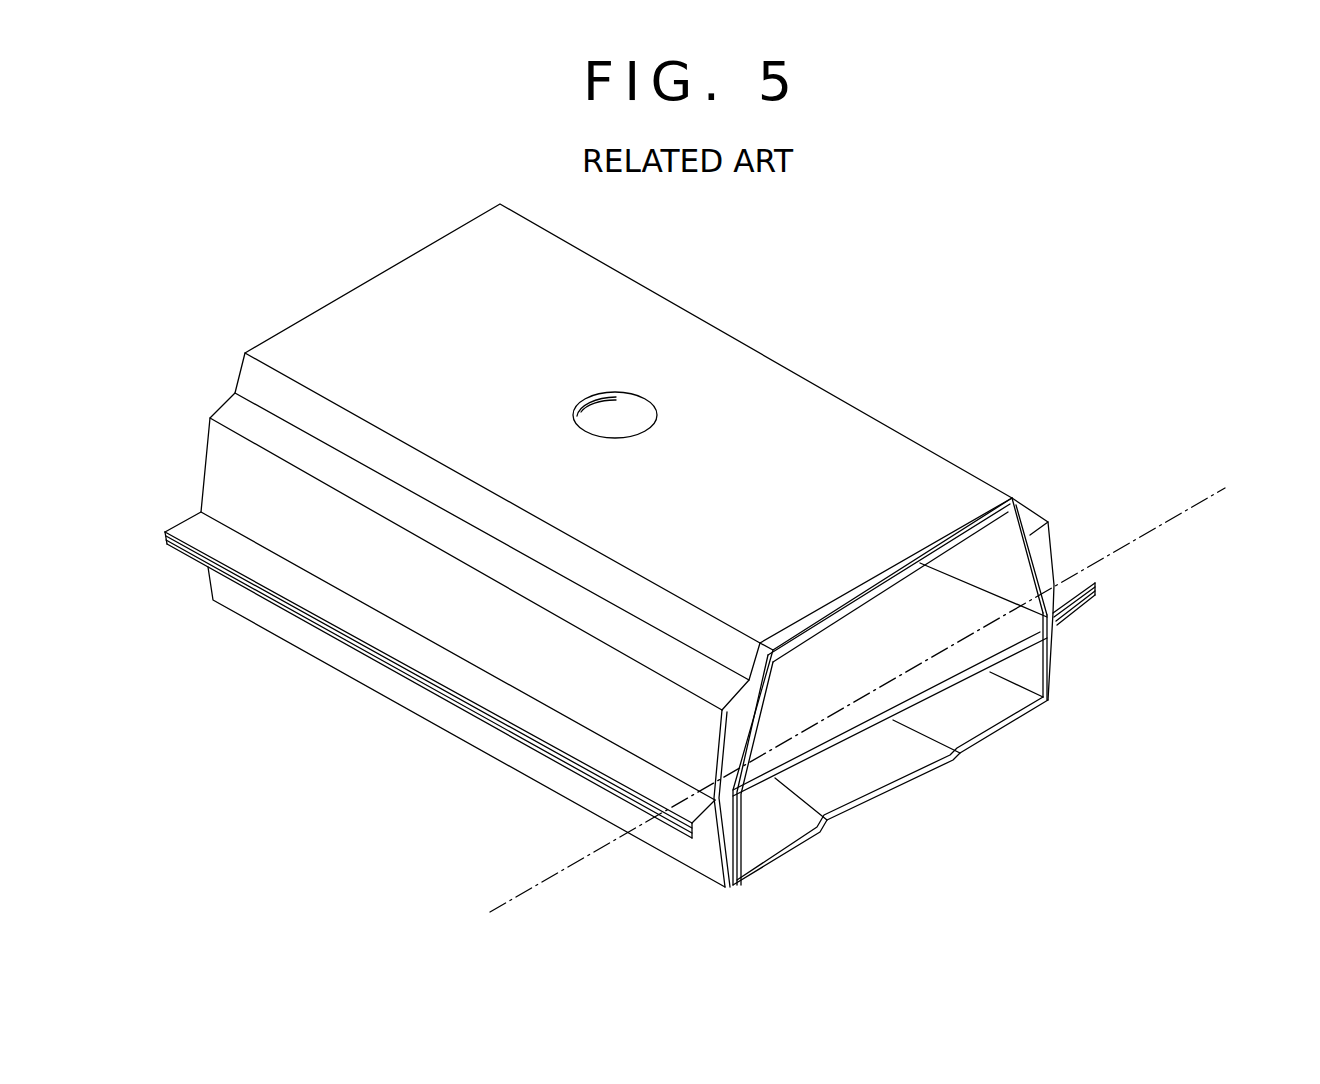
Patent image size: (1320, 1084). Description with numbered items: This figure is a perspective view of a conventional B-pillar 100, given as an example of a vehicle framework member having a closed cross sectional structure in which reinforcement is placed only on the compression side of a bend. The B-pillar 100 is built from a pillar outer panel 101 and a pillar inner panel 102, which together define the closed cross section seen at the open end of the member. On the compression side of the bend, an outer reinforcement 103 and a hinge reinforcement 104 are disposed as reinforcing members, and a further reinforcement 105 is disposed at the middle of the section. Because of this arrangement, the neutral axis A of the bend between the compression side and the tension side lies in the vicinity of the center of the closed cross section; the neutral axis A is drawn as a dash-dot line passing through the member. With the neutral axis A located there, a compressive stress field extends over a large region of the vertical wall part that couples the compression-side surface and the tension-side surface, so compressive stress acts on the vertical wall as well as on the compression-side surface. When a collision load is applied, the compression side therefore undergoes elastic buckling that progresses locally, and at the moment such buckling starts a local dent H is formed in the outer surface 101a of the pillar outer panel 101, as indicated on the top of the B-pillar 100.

The B-pillar 100 is at (832, 297).
The pillar outer panel 101 is at (1056, 545).
The outer surface 101a is at (830, 430).
The pillar inner panel 102 is at (960, 760).
The outer reinforcement 103 is at (1023, 542).
The hinge reinforcement 104 is at (1013, 562).
The reinforcement 105 is at (1015, 660).
The local dent H is at (632, 408).
The neutral axis A is at (1183, 513).